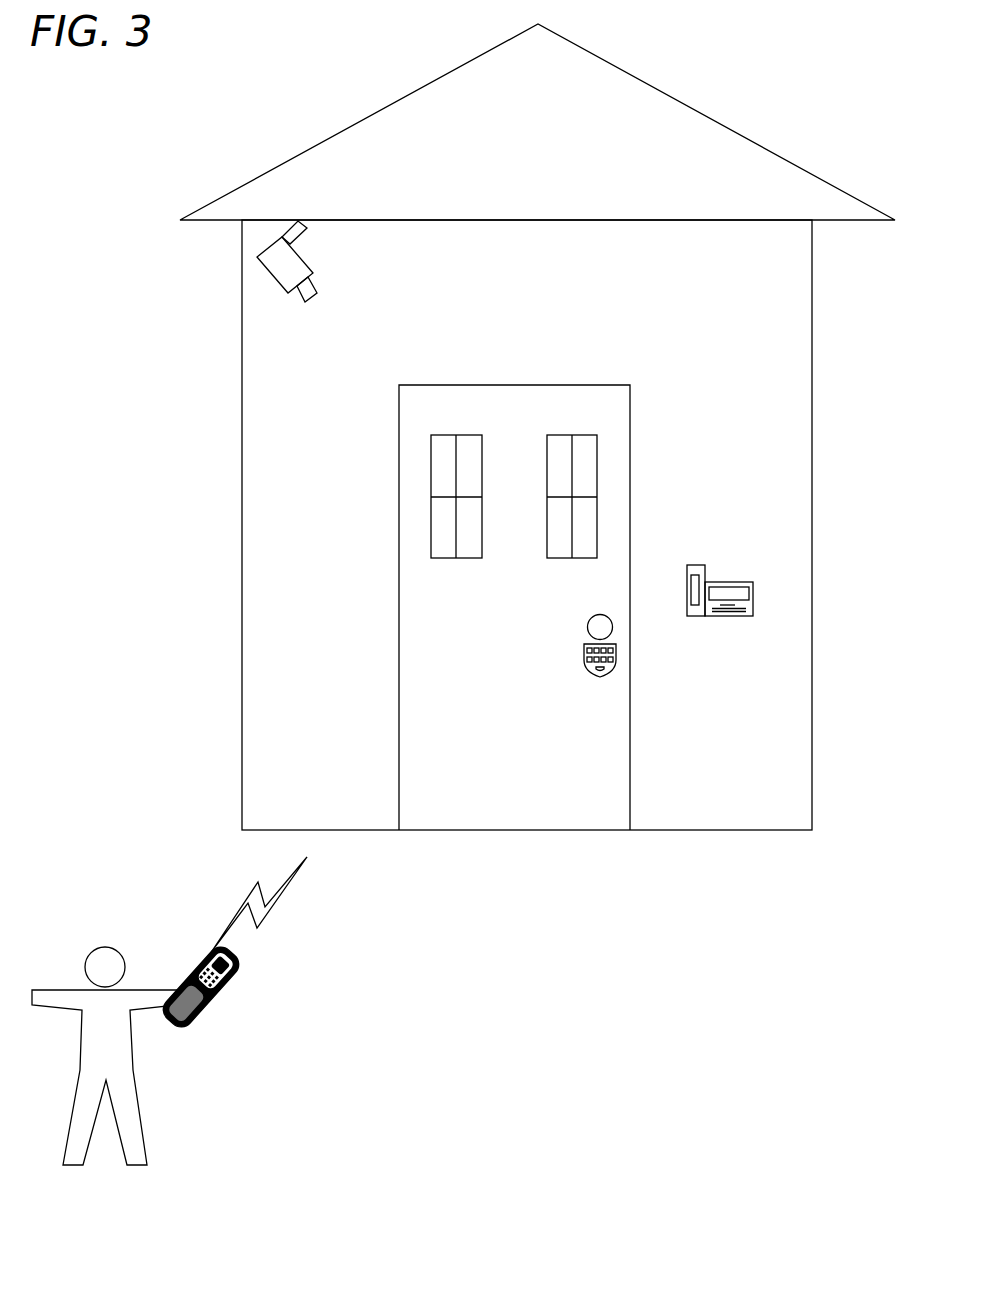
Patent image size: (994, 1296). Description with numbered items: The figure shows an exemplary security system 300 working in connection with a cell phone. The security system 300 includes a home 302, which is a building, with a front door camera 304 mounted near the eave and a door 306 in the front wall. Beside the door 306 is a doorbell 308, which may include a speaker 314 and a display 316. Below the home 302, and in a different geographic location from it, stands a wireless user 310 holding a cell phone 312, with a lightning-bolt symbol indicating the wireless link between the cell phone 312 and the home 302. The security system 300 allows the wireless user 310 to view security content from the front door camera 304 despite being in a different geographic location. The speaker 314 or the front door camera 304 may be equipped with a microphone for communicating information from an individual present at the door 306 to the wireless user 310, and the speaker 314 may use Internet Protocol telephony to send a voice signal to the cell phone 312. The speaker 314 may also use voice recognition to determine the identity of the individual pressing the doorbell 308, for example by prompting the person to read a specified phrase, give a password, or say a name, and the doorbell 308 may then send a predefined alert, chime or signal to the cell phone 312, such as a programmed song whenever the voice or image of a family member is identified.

The security system 300 is at (493, 463).
The home 302 is at (786, 158).
The front door camera 304 is at (264, 267).
The door 306 is at (605, 410).
The doorbell 308 is at (708, 554).
The wireless user 310 is at (104, 1082).
The cell phone 312 is at (233, 987).
The speaker 314 is at (724, 617).
The display 316 is at (746, 590).